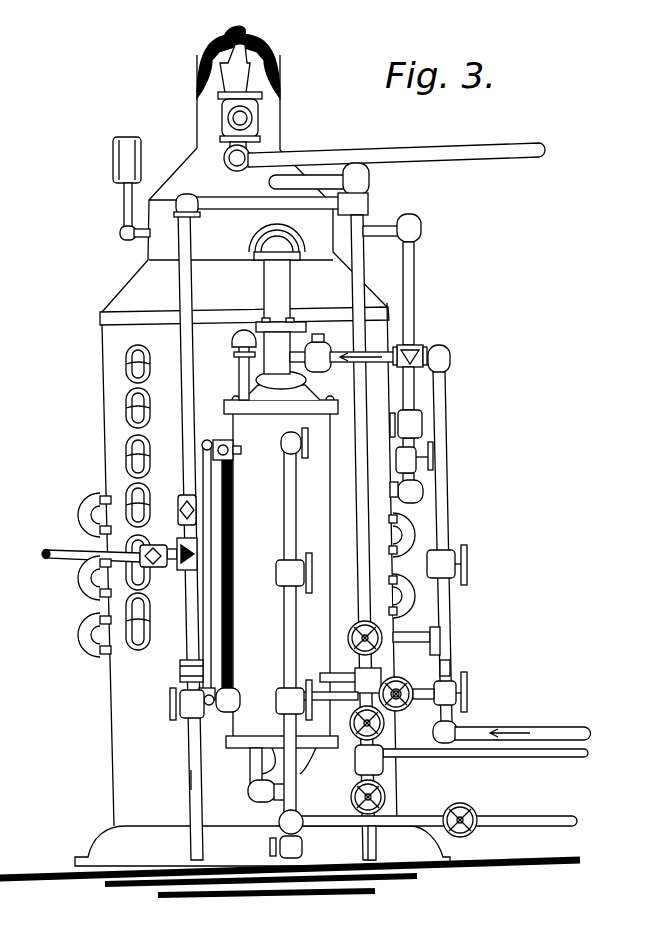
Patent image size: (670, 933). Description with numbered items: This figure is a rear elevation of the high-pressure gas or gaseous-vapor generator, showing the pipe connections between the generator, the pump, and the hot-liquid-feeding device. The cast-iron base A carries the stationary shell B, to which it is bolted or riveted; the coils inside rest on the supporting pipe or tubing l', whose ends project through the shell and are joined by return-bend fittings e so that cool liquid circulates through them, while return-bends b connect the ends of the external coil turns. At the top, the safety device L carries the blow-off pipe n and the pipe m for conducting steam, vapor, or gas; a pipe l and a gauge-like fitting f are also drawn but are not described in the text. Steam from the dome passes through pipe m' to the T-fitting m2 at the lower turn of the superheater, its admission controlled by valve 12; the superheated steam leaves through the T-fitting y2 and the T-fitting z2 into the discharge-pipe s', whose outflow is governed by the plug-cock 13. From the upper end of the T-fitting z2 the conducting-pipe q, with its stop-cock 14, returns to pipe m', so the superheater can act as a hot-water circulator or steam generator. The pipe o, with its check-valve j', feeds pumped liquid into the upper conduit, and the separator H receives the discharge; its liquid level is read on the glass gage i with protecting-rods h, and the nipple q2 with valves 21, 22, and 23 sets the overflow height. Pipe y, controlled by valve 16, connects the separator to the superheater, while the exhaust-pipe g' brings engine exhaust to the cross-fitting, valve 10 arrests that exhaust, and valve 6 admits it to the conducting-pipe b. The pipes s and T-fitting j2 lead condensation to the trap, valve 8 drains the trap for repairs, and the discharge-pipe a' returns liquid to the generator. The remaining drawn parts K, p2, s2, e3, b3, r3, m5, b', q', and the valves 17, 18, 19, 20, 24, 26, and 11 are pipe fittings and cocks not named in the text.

The base A is at (290, 860).
The shell B is at (140, 747).
The blow-off pipe n is at (238, 60).
The safety device L is at (252, 78).
The pipe m is at (211, 135).
The supply pipe l is at (396, 149).
The gauge f is at (122, 188).
The conducting-pipe q is at (260, 527).
The pipe m' is at (322, 511).
The pipe p2 is at (414, 290).
The standpipe K is at (288, 272).
The separator H is at (281, 553).
The pipe s is at (254, 566).
The check-valve j' is at (310, 348).
The pipe o is at (516, 732).
The T-coupling s2 is at (415, 348).
The pipe e3 is at (416, 393).
The valve 19 is at (420, 424).
The valve 20 is at (434, 455).
The valve 24 is at (456, 565).
The bracket b3 is at (452, 642).
The bracket r3 is at (450, 672).
The valve 18 is at (467, 693).
The exhaust-pipe g' is at (485, 762).
The discharge-pipe a' is at (438, 819).
The valve 26 is at (477, 822).
The pipe b' is at (378, 843).
The valve 12 is at (358, 627).
The pipe y is at (350, 676).
The valve 10 is at (384, 730).
The T-fitting m2 is at (355, 760).
The valve 6 is at (386, 793).
The valve 16 is at (396, 688).
The valve stem 17 is at (410, 705).
The pipe m5 is at (335, 706).
The nipple q2 is at (290, 520).
The valve 21 is at (300, 443).
The valve 22 is at (296, 572).
The valve 23 is at (301, 700).
The T-fitting j2 is at (296, 796).
The valve 8 is at (296, 846).
The protecting-rods h is at (209, 570).
The glass gage i is at (232, 567).
The stop-cock 14 is at (178, 510).
The discharge-pipe s' is at (109, 566).
The plug-cock 13 is at (153, 548).
The T-fitting z2 is at (182, 570).
The T-fitting y2 is at (180, 670).
The valve 11 is at (170, 712).
The pipe q' is at (182, 780).
The return-bends b is at (144, 497).
The return-bend fittings e is at (92, 515).
The pipe or tubing l' is at (249, 571).